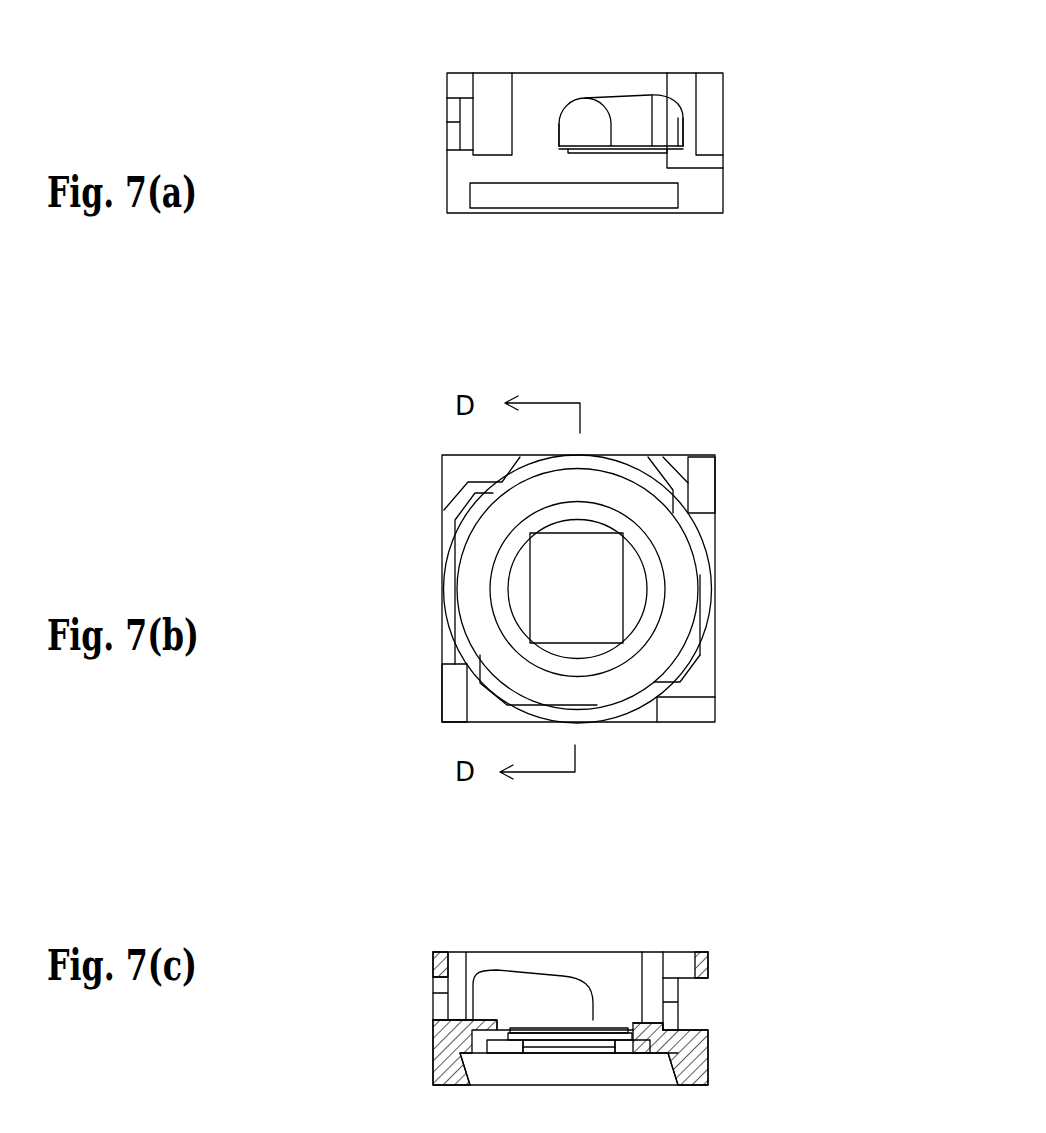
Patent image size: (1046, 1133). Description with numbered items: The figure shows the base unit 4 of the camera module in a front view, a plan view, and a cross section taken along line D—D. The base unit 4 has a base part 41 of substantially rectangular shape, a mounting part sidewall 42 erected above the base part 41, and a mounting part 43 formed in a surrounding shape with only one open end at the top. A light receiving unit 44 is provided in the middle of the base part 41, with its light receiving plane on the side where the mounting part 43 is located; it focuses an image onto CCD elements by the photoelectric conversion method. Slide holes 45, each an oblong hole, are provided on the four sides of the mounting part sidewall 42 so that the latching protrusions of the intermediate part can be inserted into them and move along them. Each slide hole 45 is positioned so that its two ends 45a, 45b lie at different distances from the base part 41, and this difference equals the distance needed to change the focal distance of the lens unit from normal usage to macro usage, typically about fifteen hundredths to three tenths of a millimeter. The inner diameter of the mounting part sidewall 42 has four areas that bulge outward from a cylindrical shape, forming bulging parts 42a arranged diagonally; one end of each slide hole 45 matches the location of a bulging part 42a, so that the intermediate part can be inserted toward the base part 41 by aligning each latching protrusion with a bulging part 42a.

In FIG. 7A, the base unit 4 is at (770, 92).
In FIG. 7A, the base part 41 is at (707, 202).
In FIG. 7C, the base part 41 is at (705, 1053).
In FIG. 7A, the mounting part sidewall 42 is at (530, 116).
In FIG. 7B, the mounting part sidewall 42 is at (670, 690).
In FIG. 7C, the mounting part sidewall 42 is at (435, 955).
In FIG. 7B, the bulging parts 42a is at (460, 507).
In FIG. 7A, the mounting part 43 is at (490, 78).
In FIG. 7B, the mounting part 43 is at (670, 568).
In FIG. 7C, the mounting part 43 is at (618, 965).
In FIG. 7A, the light receiving unit 44 is at (620, 218).
In FIG. 7B, the light receiving unit 44 is at (555, 595).
In FIG. 7C, the light receiving unit 44 is at (553, 947).
In FIG. 7A, the slide holes 45 is at (638, 113).
In FIG. 7C, the slide holes 45 is at (438, 1008).
In FIG. 7A, the end of slide hole 45a is at (565, 137).
In FIG. 7A, the end of slide hole 45b is at (667, 138).